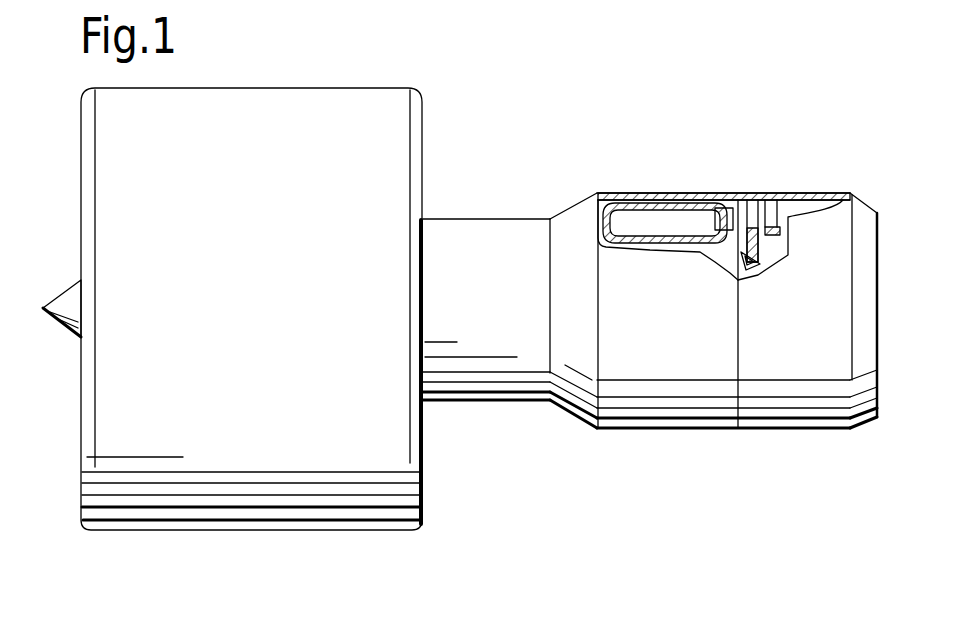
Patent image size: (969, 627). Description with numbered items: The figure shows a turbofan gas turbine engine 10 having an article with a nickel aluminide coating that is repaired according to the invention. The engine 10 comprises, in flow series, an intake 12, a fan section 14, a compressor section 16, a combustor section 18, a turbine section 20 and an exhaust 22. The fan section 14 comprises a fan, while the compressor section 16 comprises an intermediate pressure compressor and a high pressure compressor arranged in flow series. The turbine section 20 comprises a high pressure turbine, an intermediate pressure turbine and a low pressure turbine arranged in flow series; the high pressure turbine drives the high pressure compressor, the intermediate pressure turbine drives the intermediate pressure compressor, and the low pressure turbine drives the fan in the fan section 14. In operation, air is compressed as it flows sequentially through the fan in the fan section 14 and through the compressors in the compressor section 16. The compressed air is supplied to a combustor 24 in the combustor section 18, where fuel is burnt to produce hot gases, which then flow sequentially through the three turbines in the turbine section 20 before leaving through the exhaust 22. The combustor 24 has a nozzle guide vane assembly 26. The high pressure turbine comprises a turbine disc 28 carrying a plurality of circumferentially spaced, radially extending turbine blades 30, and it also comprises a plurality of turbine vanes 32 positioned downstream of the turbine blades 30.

The turbofan gas turbine engine 10 is at (550, 119).
The intake 12 is at (80, 415).
The fan section 14 is at (362, 452).
The compressor section 16 is at (500, 340).
The combustor section 18 is at (643, 388).
The turbine section 20 is at (747, 400).
The exhaust 22 is at (867, 380).
The combustor 24 is at (655, 205).
The nozzle guide vane assembly 26 is at (720, 210).
The turbine disc 28 is at (753, 268).
The turbine blades 30 is at (752, 212).
The turbine vanes 32 is at (780, 210).